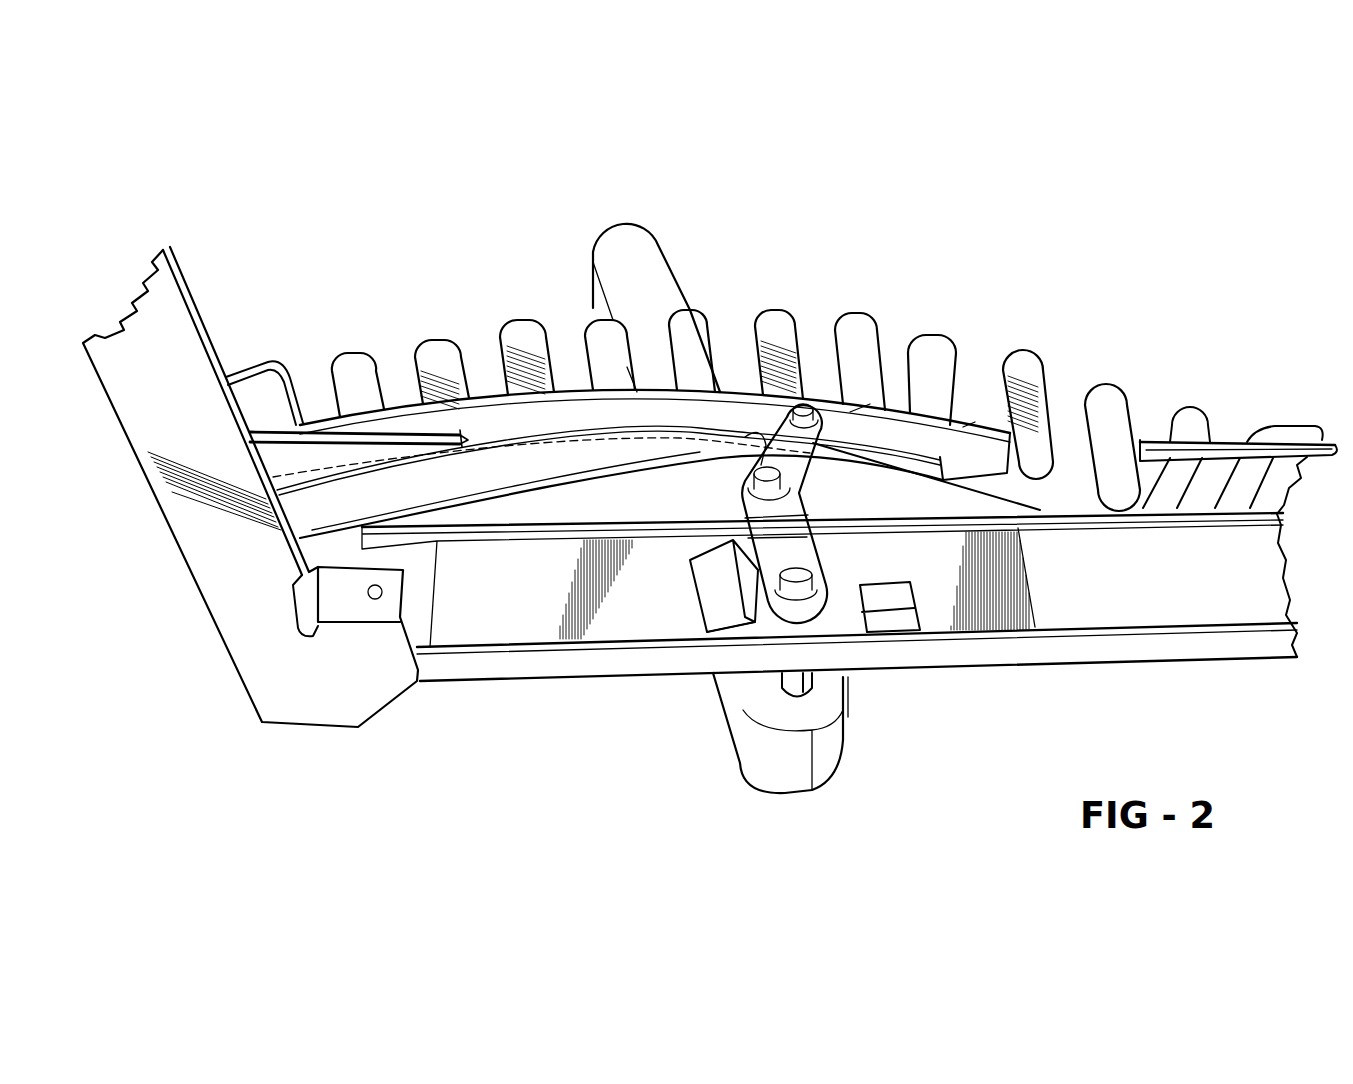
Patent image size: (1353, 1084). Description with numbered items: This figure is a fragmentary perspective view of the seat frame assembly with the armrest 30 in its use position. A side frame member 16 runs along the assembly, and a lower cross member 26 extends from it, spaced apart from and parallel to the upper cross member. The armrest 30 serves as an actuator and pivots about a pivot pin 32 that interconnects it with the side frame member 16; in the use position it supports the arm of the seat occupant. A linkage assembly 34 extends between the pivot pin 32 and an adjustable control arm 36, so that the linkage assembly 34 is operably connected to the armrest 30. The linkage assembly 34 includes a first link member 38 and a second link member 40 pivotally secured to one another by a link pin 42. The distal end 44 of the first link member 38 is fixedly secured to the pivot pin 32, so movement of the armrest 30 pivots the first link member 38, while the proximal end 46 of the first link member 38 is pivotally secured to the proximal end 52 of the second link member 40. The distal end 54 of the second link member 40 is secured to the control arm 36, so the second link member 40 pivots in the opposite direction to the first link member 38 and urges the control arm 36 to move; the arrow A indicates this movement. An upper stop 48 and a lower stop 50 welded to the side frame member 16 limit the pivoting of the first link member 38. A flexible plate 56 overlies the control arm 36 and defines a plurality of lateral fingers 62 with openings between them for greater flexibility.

The side frame member 16 is at (1137, 655).
The lower cross member 26 is at (190, 320).
The armrest 30 is at (652, 257).
The pivot pin 32 is at (793, 597).
The linkage assembly 34 is at (730, 498).
The control arm 36 is at (963, 427).
The first link member 38 is at (830, 592).
The second link member 40 is at (850, 412).
The link pin 42 is at (745, 467).
The distal end of first link member 44 is at (810, 556).
The proximal end of first link member 46 is at (715, 512).
The upper stop 48 is at (912, 587).
The lower stop 50 is at (723, 593).
The proximal end of second link member 52 is at (737, 560).
The distal end of second link member 54 is at (807, 404).
The plate 56 is at (1282, 424).
The lateral fingers 62 is at (443, 347).
The direction of movement A is at (878, 552).